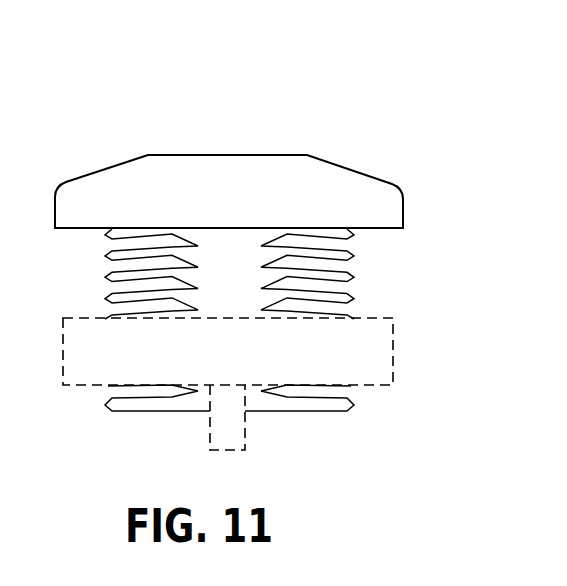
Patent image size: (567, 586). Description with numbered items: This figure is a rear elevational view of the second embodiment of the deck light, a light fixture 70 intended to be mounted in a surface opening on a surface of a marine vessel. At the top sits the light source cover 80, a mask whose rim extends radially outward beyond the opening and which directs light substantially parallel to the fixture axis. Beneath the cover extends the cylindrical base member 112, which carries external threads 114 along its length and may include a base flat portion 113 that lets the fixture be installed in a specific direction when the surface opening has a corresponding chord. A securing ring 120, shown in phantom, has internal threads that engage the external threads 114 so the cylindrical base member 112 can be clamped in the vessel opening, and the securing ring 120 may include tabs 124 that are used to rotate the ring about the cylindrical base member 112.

The light fixture 70 is at (450, 95).
The light source cover 80 is at (320, 175).
The cylindrical base member 112 is at (428, 233).
The base flat portion 113 is at (242, 280).
The external threads 114 is at (332, 298).
The securing ring 120 is at (378, 366).
The tabs 124 is at (232, 443).